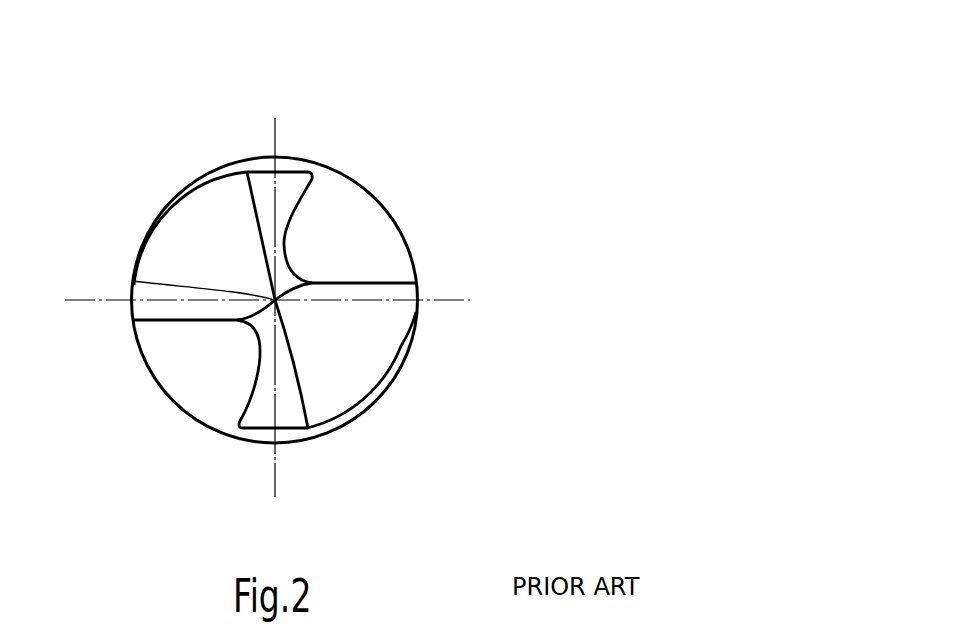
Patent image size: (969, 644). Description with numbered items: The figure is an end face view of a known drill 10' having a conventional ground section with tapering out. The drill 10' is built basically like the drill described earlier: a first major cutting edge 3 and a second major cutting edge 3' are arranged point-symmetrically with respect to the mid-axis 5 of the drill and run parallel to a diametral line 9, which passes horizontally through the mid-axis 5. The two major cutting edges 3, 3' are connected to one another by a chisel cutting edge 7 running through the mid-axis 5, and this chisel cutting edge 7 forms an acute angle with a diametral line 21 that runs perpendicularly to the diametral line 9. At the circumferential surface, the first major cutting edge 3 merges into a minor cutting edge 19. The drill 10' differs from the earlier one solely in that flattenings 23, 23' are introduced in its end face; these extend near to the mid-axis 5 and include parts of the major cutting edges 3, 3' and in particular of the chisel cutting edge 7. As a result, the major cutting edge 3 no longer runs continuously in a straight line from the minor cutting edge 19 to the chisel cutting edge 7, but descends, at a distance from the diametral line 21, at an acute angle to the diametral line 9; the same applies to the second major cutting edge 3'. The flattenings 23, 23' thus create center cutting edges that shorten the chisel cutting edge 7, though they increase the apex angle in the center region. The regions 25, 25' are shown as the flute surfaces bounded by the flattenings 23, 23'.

The drill 10' is at (309, 259).
The diametral line 21 is at (275, 137).
The diametral line 9 is at (448, 302).
The flattening 23 is at (323, 171).
The first flute wall (curved face) 25 is at (402, 213).
The first major cutting edge 3 is at (399, 246).
The minor cutting edge 19 is at (421, 282).
The mid-axis 5 is at (277, 300).
The flattening 23' is at (257, 416).
The second flute wall (curved face) 25' is at (182, 423).
The second major cutting edge 3' is at (146, 360).
The chisel cutting edge 7 is at (133, 281).